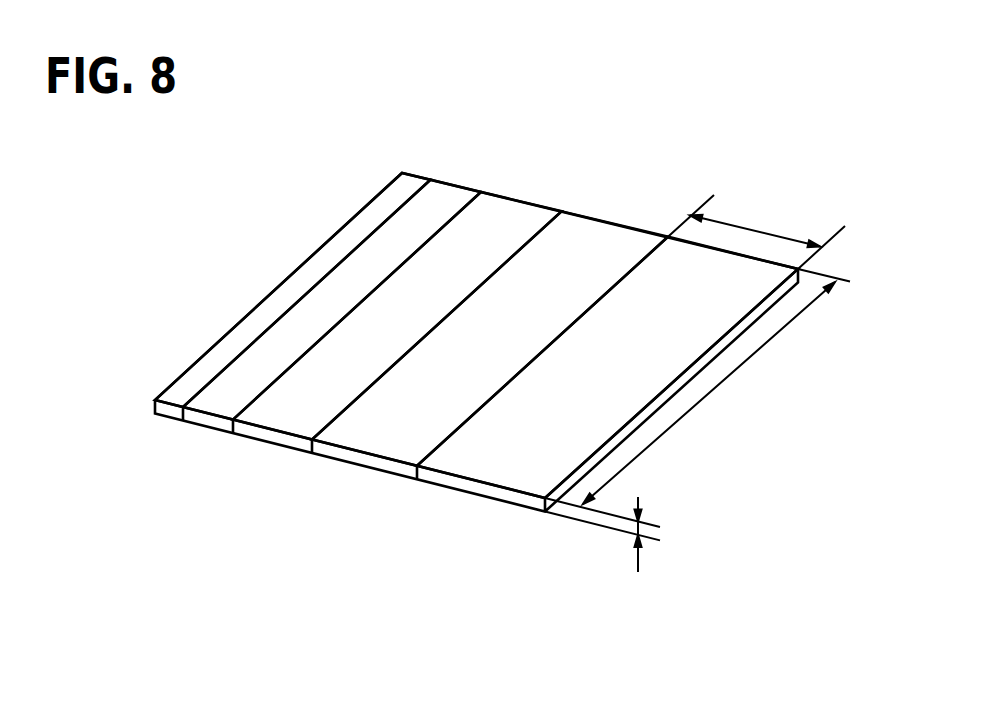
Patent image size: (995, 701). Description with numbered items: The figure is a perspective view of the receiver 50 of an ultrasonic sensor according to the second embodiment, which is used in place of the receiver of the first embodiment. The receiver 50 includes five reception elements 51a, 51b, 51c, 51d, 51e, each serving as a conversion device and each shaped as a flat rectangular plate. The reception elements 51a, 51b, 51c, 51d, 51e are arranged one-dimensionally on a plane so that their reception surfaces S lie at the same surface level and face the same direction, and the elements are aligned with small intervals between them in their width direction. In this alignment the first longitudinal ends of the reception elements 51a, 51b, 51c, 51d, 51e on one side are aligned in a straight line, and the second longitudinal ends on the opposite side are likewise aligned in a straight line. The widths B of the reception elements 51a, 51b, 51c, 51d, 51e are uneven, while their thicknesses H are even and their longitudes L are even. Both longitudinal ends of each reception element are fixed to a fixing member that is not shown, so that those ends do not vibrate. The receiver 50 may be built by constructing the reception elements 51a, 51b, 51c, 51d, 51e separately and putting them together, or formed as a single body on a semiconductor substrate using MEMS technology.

The receiver 50 is at (460, 322).
The reception element 51a is at (298, 418).
The reception element 51b is at (368, 443).
The reception element 51c is at (486, 470).
The reception element 51d is at (226, 404).
The reception element 51e is at (178, 396).
The reception surface S is at (243, 337).
The width B is at (756, 232).
The longitude L is at (697, 398).
The thickness H is at (602, 550).